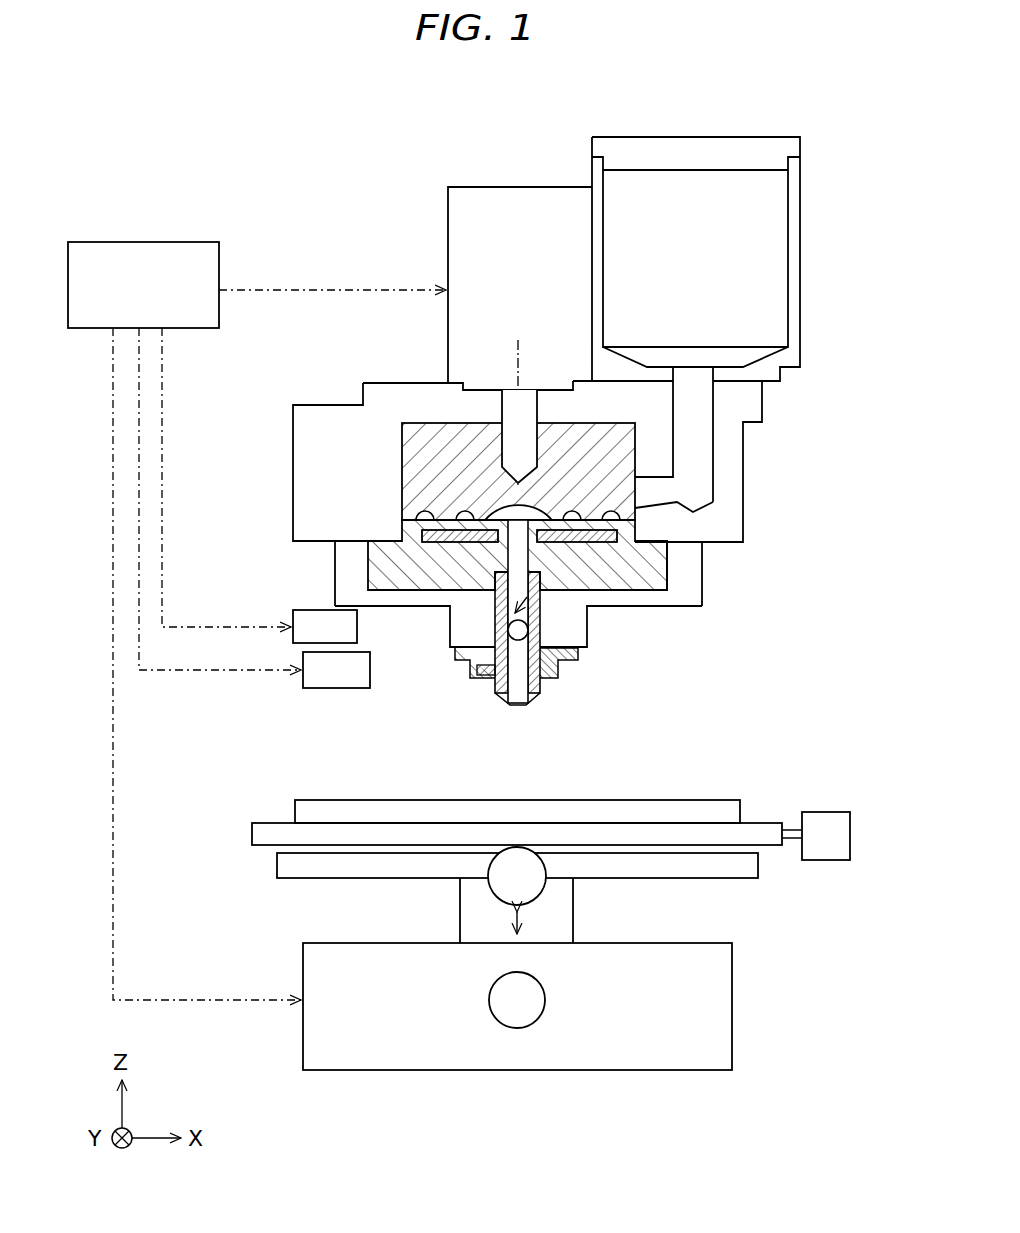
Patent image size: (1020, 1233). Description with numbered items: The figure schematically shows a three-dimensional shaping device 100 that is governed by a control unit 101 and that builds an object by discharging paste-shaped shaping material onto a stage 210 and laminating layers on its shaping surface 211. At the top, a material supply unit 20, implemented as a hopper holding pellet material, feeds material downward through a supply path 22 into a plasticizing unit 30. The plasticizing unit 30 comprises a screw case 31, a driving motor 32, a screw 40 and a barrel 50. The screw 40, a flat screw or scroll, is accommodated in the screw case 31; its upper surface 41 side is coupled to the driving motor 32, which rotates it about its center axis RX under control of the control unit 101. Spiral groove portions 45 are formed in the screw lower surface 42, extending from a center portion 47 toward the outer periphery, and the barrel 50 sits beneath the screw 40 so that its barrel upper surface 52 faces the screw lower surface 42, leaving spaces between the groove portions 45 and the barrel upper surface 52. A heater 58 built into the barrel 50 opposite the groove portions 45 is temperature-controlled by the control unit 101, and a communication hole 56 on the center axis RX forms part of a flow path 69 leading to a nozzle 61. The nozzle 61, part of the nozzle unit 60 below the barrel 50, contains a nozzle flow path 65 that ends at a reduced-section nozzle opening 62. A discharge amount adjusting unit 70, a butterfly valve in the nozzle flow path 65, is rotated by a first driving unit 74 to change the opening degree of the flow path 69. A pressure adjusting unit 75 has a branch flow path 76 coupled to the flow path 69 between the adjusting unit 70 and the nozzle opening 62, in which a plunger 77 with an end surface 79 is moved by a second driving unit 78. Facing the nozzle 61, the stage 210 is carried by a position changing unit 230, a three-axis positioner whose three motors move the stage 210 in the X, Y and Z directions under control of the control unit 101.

The three-dimensional shaping device 100 is at (691, 113).
The control unit 101 is at (194, 242).
The material supply unit 20 is at (800, 250).
The supply path 22 is at (692, 443).
The plasticizing unit 30 is at (442, 396).
The screw case 31 is at (413, 381).
The driving motor 32 is at (448, 213).
The center axis RX is at (515, 345).
The screw 40 is at (411, 444).
The upper surface 41 is at (413, 420).
The screw lower surface 42 is at (412, 541).
The groove portions 45 is at (480, 500).
The center portion 47 is at (462, 470).
The barrel upper surface 52 is at (456, 515).
The barrel 50 is at (518, 520).
The heater 58 is at (665, 562).
The communication hole 56 is at (529, 562).
The nozzle flow path 65 is at (530, 630).
The flow path 69 is at (620, 611).
The nozzle unit 60 is at (533, 629).
The nozzle 61 is at (570, 679).
The nozzle opening 62 is at (518, 706).
The discharge amount adjusting unit 70 is at (536, 672).
The first driving unit 74 is at (298, 611).
The pressure adjusting unit 75 is at (403, 714).
The branch flow path 76 is at (490, 668).
The plunger 77 is at (485, 678).
The second driving unit 78 is at (332, 689).
The end surface 79 is at (498, 680).
The stage 210 is at (551, 810).
The shaping surface 211 is at (604, 800).
The position changing unit 230 is at (779, 926).